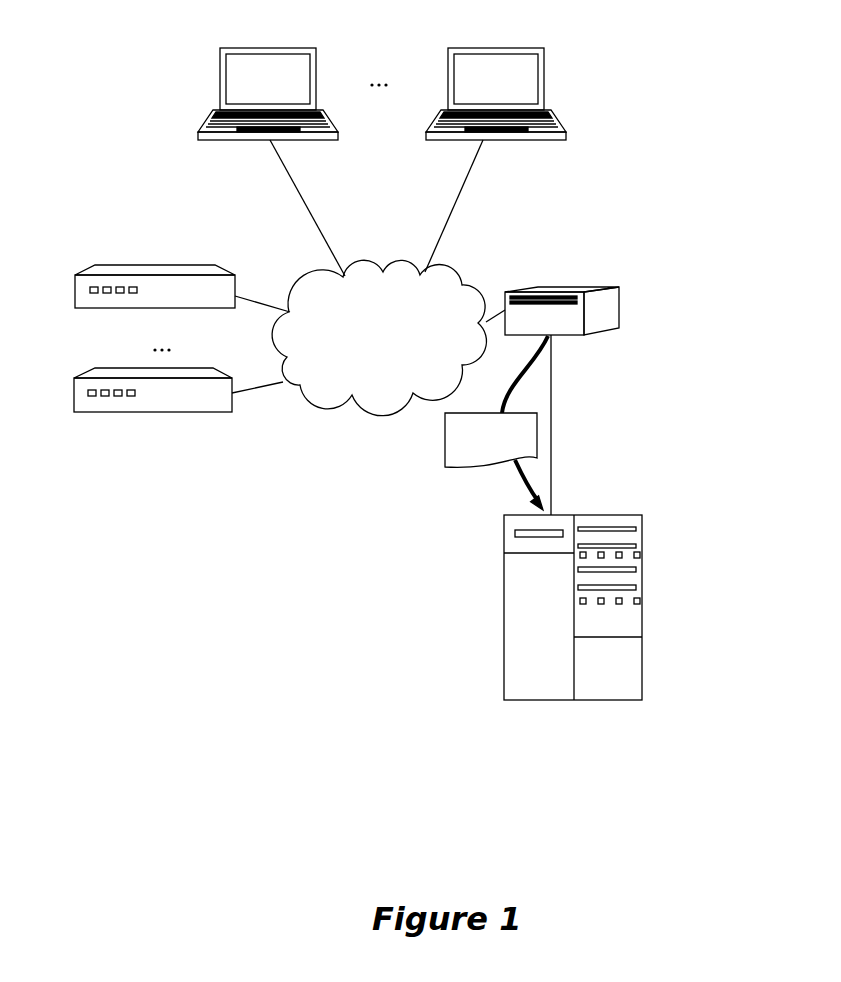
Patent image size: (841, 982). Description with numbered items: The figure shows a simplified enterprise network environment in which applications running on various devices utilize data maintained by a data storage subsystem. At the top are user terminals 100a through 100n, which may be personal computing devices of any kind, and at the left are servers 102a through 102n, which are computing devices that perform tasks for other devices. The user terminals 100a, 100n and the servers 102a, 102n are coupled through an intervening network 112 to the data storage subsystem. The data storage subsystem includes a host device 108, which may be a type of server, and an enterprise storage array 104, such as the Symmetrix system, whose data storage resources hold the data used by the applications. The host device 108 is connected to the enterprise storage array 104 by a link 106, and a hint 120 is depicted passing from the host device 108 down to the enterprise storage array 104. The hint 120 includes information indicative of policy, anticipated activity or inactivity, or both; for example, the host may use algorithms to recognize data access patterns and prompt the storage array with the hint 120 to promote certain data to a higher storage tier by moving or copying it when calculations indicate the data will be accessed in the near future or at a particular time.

The user terminal 100a is at (278, 48).
The user terminal 100n is at (498, 48).
The server 102a is at (185, 265).
The server 102n is at (125, 368).
The enterprise storage array 104 is at (645, 533).
The communication link 106 is at (553, 402).
The host device 108 is at (572, 288).
The network 112 is at (399, 346).
The hint 120 is at (445, 446).